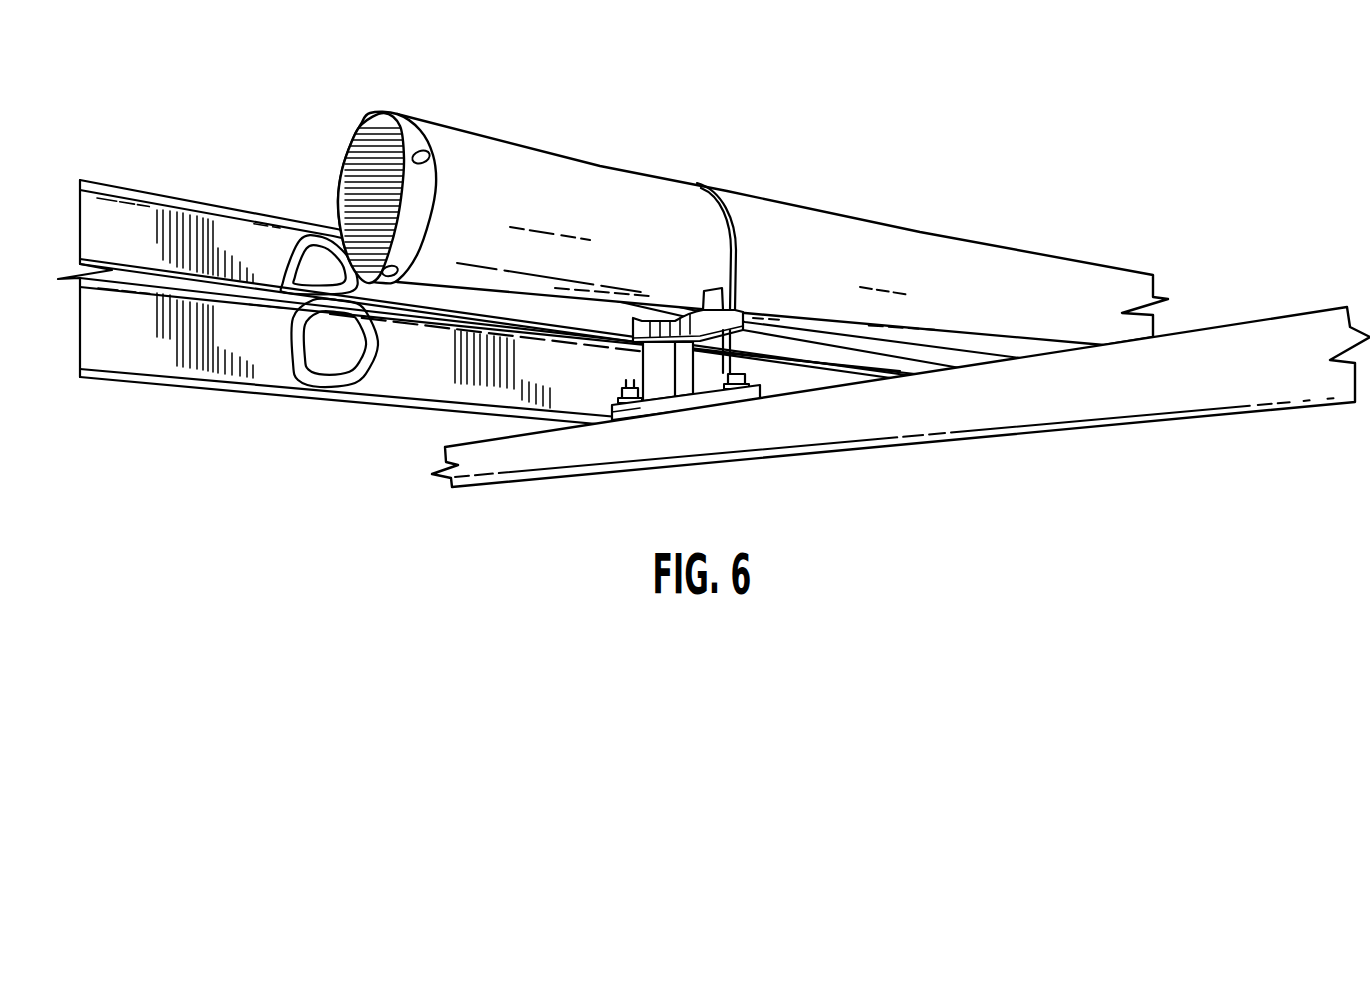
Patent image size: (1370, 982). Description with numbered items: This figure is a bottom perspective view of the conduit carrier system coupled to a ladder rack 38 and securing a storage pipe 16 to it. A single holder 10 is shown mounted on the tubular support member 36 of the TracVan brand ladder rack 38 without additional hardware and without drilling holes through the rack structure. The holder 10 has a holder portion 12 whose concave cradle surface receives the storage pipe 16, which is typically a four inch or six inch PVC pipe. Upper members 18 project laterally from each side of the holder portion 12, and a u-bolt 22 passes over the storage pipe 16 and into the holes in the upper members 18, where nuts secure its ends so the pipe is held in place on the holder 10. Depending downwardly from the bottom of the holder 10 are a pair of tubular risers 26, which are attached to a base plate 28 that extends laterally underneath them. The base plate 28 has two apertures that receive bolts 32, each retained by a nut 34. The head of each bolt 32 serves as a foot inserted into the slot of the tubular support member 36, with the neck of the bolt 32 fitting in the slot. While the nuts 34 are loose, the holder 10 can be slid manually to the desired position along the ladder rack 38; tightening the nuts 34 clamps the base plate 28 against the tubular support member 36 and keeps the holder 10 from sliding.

The holder 10 is at (713, 168).
The holder portion 12 is at (722, 290).
The storage pipe 16 is at (518, 145).
The upper members 18 is at (745, 313).
The u-bolt 22 is at (711, 183).
The tubular risers 26 is at (660, 388).
The base plate 28 is at (637, 408).
The bolt 32 is at (630, 388).
The nut 34 is at (614, 400).
The tubular support member 36 is at (803, 418).
The ladder rack 38 is at (1107, 414).